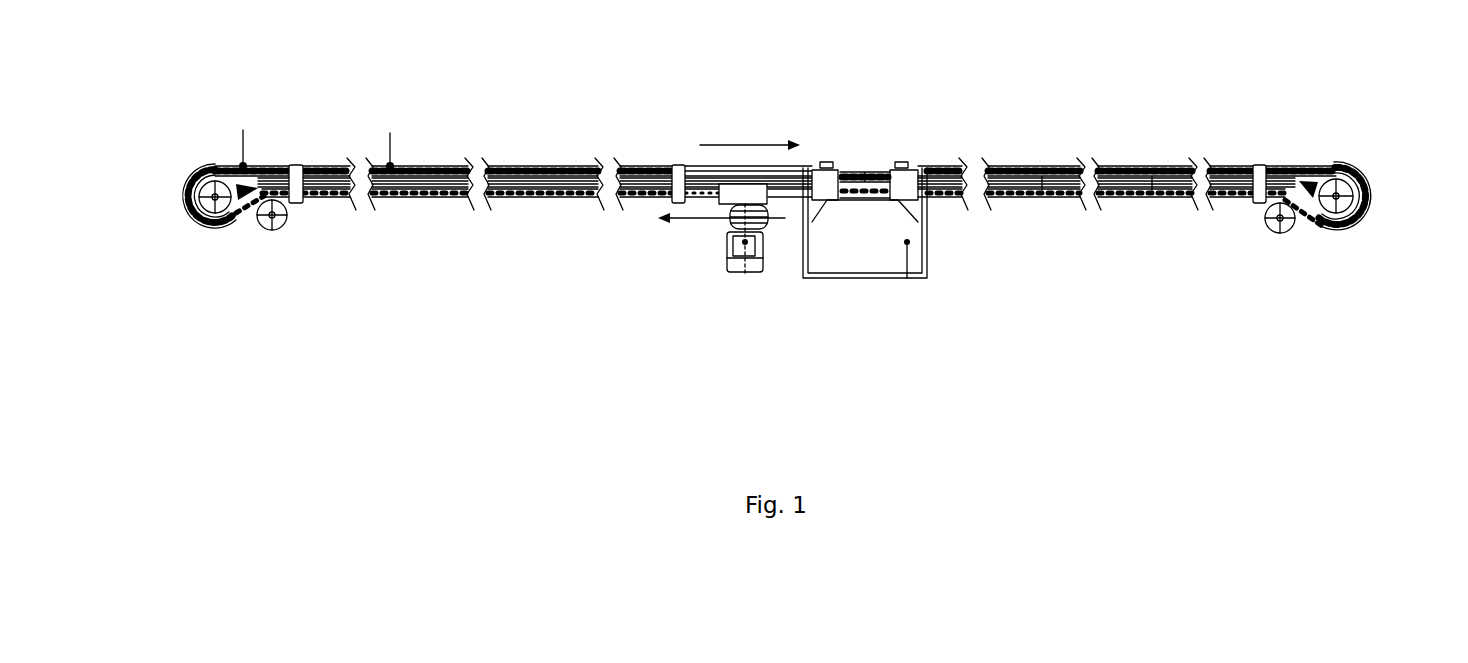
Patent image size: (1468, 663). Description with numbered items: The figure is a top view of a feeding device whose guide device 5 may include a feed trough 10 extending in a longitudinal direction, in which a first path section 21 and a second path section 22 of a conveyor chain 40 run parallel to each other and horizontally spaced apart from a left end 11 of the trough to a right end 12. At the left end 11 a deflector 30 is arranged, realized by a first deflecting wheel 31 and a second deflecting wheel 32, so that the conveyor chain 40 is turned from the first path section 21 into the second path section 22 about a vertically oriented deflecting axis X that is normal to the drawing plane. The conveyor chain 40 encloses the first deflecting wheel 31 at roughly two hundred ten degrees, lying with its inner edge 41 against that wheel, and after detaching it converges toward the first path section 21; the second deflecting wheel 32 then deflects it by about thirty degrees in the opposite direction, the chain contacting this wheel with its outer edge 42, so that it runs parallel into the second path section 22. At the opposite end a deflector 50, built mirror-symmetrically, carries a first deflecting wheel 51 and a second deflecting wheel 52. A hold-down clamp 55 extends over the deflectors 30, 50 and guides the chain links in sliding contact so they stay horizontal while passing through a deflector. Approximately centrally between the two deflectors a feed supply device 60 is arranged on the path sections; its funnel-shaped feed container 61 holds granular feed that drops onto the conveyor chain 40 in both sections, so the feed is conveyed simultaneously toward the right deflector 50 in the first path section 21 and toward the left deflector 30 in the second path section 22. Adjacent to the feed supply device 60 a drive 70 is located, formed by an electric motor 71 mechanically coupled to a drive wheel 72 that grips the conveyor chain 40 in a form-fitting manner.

The guide device 5 is at (771, 225).
The feed trough 10 is at (521, 165).
The left end 11 is at (190, 227).
The right end 12 is at (1350, 232).
The first path section 21 is at (943, 165).
The second path section 22 is at (966, 198).
The deflector 30 is at (230, 225).
The first deflecting wheel 31 is at (215, 163).
The second deflecting wheel 32 is at (273, 231).
The conveyor chain 40 is at (421, 170).
The inner edge 41 is at (333, 194).
The outer edge 42 is at (310, 212).
The deflector 50 is at (1291, 196).
The first deflecting wheel 51 is at (1325, 166).
The second deflecting wheel 52 is at (1273, 232).
The hold-down clamp 55 is at (1372, 170).
The feed supply device 60 is at (865, 294).
The feed container 61 is at (845, 262).
The drive 70 is at (715, 237).
The electric motor 71 is at (746, 243).
The drive wheel 72 is at (736, 188).
The deflecting axis X is at (226, 228).